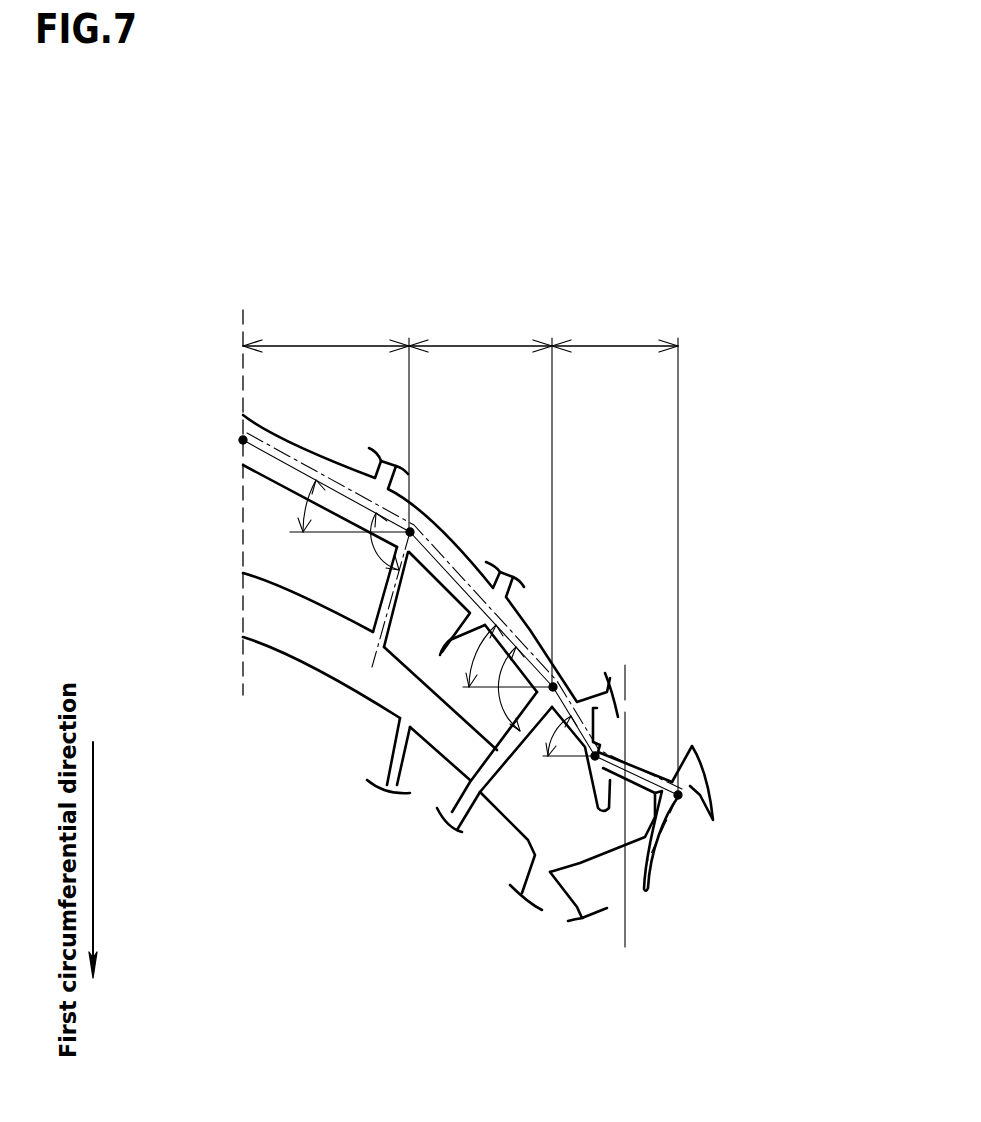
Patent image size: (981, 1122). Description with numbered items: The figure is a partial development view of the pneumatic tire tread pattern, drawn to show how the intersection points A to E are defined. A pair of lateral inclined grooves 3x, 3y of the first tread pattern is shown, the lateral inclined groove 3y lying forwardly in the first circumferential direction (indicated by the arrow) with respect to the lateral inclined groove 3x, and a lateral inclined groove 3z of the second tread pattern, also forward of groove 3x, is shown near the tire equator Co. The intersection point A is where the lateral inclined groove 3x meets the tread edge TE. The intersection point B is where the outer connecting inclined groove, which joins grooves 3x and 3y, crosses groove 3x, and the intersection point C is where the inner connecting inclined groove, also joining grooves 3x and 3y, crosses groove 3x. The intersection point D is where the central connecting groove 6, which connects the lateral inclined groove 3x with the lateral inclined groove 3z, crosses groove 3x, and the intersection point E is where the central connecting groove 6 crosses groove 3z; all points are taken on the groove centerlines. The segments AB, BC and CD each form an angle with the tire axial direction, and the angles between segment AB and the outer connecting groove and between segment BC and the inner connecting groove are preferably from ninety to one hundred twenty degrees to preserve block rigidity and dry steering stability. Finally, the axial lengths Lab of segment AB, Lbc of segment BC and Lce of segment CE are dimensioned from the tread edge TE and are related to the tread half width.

The central connecting groove 6 is at (640, 768).
The lateral inclined groove 3x is at (259, 458).
The lateral inclined groove 3y is at (287, 619).
The lateral inclined groove 3z is at (690, 785).
The intersection point A is at (243, 440).
The intersection point B is at (410, 532).
The intersection point C is at (553, 687).
The intersection point D is at (595, 756).
The intersection point E is at (678, 795).
The tread edge TE is at (243, 330).
The tire equator Co is at (626, 824).
The axial length of segment AB Lab is at (328, 346).
The axial length of segment BC Lbc is at (482, 346).
The axial length of segment CE Lce is at (617, 346).